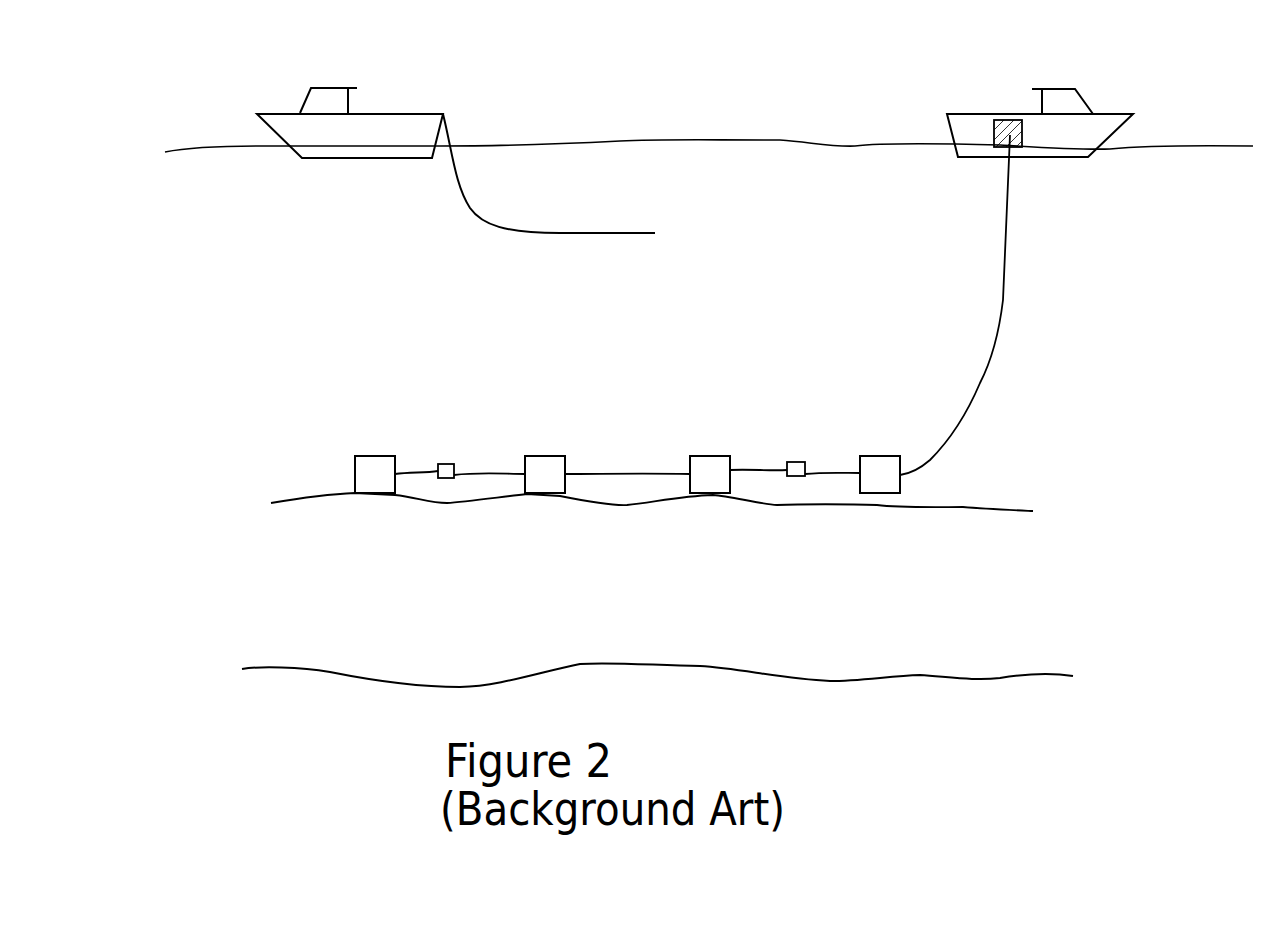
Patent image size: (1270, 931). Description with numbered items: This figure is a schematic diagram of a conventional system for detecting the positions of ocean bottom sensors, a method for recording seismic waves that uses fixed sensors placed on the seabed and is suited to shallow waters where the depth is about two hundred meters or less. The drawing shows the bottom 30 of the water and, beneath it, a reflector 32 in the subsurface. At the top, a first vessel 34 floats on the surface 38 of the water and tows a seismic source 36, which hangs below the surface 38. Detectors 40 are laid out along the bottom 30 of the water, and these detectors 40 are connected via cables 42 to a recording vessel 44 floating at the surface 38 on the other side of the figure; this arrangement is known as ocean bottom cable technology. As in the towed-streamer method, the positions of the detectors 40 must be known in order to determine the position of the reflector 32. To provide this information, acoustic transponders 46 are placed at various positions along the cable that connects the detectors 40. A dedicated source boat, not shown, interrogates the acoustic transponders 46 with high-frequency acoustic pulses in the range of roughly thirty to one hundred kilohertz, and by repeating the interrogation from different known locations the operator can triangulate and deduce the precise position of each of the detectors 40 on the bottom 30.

The bottom of the water 30 is at (998, 507).
The reflector 32 is at (967, 680).
The first vessel 34 is at (413, 113).
The seismic source 36 is at (598, 233).
The surface of the water 38 is at (598, 142).
The detectors 40 is at (552, 464).
The cables 42 is at (1000, 330).
The recording vessel 44 is at (1093, 113).
The acoustic transponders 46 is at (445, 464).